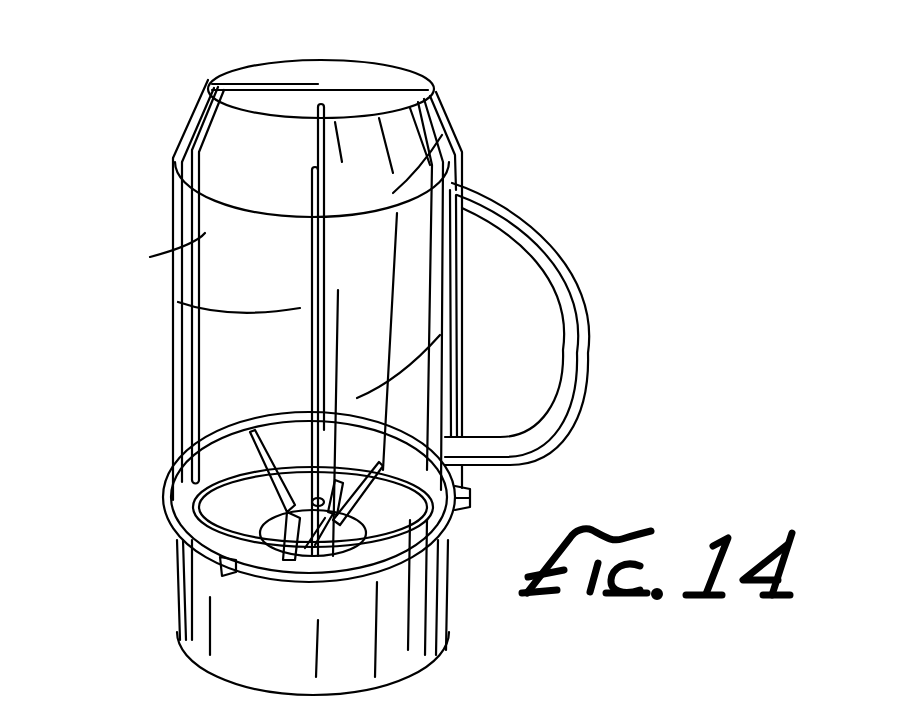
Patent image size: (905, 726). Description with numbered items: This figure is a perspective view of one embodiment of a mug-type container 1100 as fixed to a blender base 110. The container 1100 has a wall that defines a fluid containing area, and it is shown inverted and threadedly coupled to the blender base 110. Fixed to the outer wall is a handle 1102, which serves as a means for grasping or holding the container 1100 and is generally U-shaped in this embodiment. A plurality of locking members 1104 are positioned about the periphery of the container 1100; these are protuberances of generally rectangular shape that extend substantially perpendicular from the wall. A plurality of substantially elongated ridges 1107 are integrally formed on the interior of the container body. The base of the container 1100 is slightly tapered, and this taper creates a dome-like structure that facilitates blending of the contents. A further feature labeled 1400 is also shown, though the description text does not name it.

The mug-type container 1100 is at (392, 68).
The container shoulder rib 1400 is at (452, 137).
The handle 1102 is at (542, 233).
The elongated ridges 1107 is at (198, 243).
The locking members 1104 is at (471, 498).
The blender base 110 is at (393, 665).